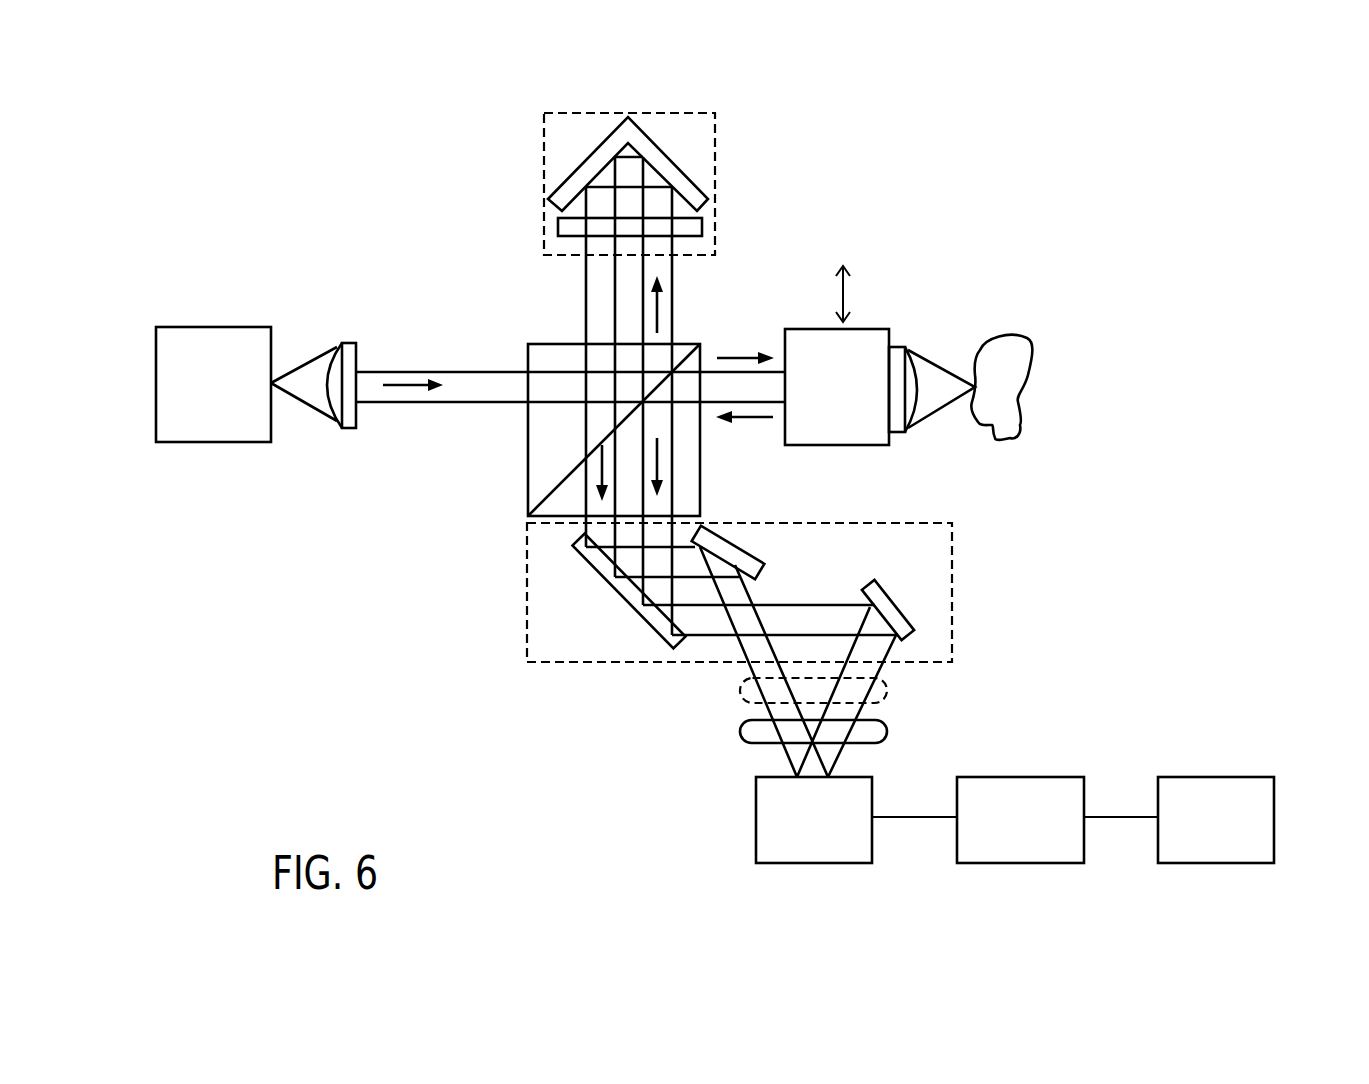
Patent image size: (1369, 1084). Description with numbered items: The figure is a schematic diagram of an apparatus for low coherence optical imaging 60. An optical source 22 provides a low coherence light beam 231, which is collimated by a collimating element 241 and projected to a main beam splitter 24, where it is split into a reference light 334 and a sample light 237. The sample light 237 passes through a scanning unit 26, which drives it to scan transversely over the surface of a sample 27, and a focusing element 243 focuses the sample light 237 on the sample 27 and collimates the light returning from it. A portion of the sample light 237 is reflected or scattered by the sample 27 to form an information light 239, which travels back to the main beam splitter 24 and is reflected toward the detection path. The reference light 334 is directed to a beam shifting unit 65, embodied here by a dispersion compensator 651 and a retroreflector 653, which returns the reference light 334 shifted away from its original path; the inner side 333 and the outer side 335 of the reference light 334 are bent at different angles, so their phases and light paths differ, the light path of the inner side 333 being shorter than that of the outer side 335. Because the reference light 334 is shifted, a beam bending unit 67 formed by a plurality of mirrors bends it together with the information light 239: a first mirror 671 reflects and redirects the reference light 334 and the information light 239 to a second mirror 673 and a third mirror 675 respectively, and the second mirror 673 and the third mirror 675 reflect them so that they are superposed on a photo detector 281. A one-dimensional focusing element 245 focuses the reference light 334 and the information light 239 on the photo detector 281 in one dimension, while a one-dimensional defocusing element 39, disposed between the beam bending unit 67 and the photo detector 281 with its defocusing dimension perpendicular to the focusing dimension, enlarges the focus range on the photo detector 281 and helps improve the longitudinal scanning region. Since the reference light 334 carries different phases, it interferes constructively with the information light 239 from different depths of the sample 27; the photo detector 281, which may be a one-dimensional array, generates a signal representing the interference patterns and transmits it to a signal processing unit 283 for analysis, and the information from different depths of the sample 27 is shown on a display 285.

The apparatus for low coherence optical imaging 60 is at (245, 143).
The optical source 22 is at (184, 327).
The collimating element 241 is at (347, 343).
The light beam 231 is at (420, 382).
The main beam splitter 24 is at (527, 357).
The outer side of the reference light 335 is at (586, 330).
The inner side of the reference light 333 is at (613, 308).
The reference light 334 is at (668, 306).
The beam shifting unit 65 is at (619, 184).
The retroreflector 653 is at (698, 183).
The dispersion compensator 651 is at (702, 230).
The sample light 237 is at (742, 355).
The information light 239 is at (752, 422).
The scanning unit 26 is at (885, 329).
The focusing element 243 is at (897, 432).
The sample 27 is at (1032, 340).
The beam bending unit 67 is at (742, 634).
The first mirror 671 is at (578, 567).
The second mirror 673 is at (748, 547).
The third mirror 675 is at (887, 592).
The one-dimensional defocusing element 39 is at (887, 690).
The one-dimensional focusing element 245 is at (743, 727).
The photo detector 281 is at (756, 808).
The signal processing unit 283 is at (1043, 777).
The display 285 is at (1247, 777).